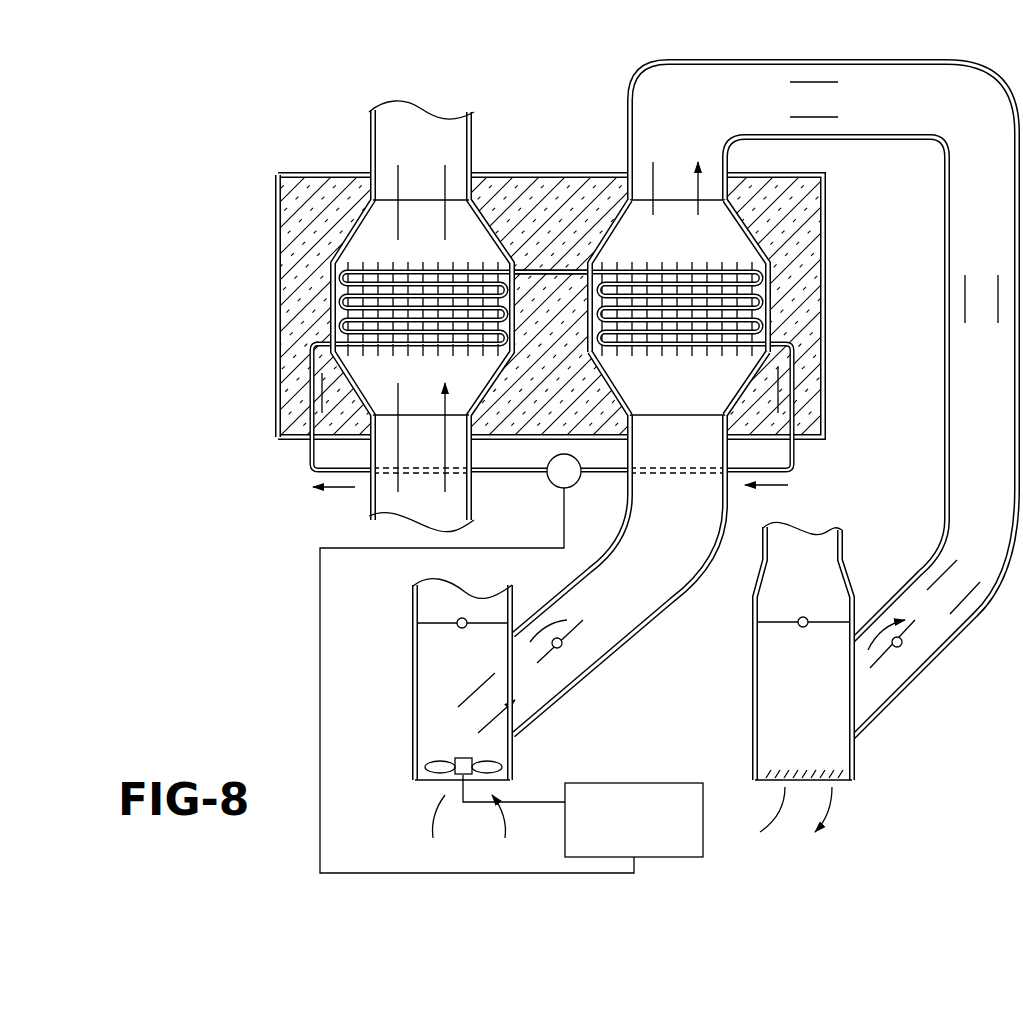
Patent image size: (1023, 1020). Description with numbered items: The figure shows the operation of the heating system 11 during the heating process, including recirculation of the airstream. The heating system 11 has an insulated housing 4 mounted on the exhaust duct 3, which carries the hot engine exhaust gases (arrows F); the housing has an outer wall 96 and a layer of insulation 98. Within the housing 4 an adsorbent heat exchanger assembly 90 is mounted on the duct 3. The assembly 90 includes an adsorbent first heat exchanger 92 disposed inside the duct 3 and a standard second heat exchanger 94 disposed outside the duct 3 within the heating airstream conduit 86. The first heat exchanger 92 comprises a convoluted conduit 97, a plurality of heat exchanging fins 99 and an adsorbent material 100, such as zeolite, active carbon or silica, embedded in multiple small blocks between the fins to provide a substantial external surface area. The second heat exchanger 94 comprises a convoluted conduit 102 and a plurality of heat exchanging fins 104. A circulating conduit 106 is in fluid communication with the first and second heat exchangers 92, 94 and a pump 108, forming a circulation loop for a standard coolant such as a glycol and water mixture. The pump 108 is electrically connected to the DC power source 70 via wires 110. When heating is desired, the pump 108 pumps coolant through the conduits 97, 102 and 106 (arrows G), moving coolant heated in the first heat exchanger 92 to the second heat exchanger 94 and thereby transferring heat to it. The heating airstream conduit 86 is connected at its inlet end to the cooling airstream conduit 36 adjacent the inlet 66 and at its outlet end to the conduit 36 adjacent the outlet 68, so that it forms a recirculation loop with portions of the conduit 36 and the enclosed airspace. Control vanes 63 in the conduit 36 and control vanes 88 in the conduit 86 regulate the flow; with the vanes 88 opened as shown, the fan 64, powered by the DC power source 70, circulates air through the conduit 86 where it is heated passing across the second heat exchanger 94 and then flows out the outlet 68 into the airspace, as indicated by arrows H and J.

The heating system 11 is at (245, 112).
The exhaust duct 3 is at (370, 142).
The insulated housing 4 is at (521, 306).
The adsorbent first heat exchanger 92 is at (398, 319).
The outer wall 96 is at (276, 262).
The convoluted conduit 97 is at (335, 302).
The layer of insulation 98 is at (295, 318).
The heat exchanging fins 99 is at (450, 352).
The adsorbent material 100 is at (310, 352).
The adsorbent heat exchanger assembly 90 is at (730, 336).
The second heat exchanger 94 is at (737, 257).
The convoluted conduit 102 is at (762, 290).
The heat exchanging fins 104 is at (690, 356).
The circulating conduit 106 is at (797, 457).
The pump 108 is at (553, 483).
The wires 110 is at (320, 598).
The control vanes 63 is at (432, 624).
The airstream conduit 36 is at (627, 680).
The fan 64 is at (437, 763).
The inlet 66 is at (432, 782).
The outlet 68 is at (845, 782).
The DC power source 70 is at (650, 783).
The heating airstream conduit 86 is at (637, 93).
The control vanes 88 is at (540, 662).